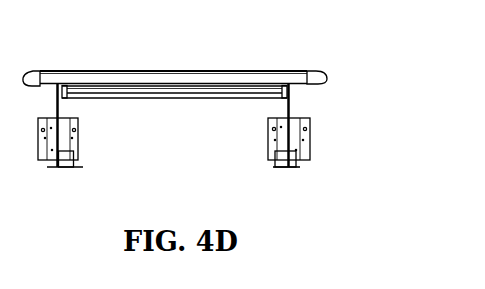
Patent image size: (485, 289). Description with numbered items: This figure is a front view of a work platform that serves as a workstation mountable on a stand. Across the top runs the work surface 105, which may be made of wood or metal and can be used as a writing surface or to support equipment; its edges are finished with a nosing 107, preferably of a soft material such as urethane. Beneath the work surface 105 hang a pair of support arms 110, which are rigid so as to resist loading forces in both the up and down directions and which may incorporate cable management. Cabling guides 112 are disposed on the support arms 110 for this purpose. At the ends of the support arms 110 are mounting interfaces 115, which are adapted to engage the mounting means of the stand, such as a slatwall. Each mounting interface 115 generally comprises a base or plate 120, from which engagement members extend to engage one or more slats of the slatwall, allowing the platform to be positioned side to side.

The work surface 105 is at (203, 67).
The nosing 107 is at (265, 81).
The support arms 110 is at (290, 104).
The cabling guides 112 is at (75, 163).
The mounting interfaces 115 is at (257, 142).
The plate 120 is at (307, 153).